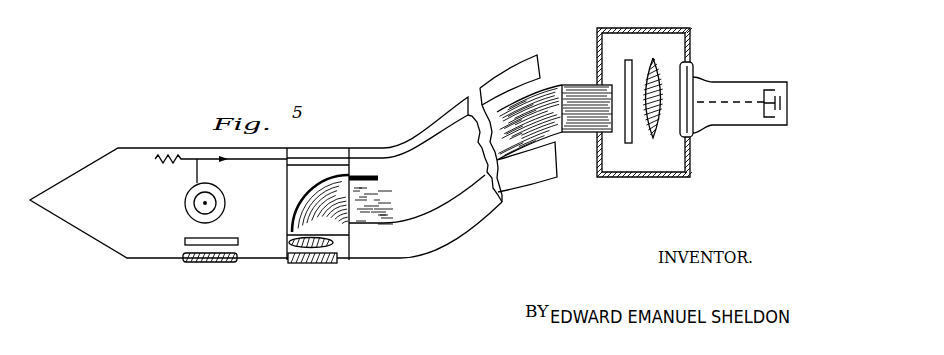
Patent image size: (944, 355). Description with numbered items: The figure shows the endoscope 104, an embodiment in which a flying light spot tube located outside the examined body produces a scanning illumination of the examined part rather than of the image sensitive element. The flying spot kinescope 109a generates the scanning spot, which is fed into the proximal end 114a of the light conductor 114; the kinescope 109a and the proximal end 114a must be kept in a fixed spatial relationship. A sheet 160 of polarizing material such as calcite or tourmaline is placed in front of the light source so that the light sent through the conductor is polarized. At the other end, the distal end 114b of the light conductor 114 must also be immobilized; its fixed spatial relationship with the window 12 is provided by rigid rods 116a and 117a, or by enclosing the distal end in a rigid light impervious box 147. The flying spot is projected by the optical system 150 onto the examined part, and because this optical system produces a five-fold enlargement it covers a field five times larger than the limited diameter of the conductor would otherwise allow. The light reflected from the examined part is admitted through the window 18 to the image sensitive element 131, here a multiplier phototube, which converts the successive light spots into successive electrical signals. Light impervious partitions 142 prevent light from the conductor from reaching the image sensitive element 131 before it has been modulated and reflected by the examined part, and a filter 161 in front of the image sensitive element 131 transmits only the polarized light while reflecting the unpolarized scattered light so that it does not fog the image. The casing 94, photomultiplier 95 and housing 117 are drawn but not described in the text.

The endoscope 104 is at (133, 182).
The image sensitive element 131 is at (190, 210).
The filter 161 is at (183, 240).
The window 18 is at (205, 263).
The light impervious partitions 142 is at (303, 165).
The rigid light impervious box 147 is at (298, 183).
The optical system 150 is at (290, 248).
The window 12 is at (316, 265).
The distal end of the light conductor 114b is at (334, 240).
The rigid rod 117a is at (349, 245).
The rigid rod 116a is at (351, 150).
The light conductor 114 is at (443, 195).
The proximal end of the light conductor 114a is at (584, 38).
The tube 117 is at (618, 43).
The casing 94 is at (680, 87).
The photomultiplier 95 is at (690, 63).
The kinescope 109a is at (729, 92).
The sheet 160 is at (627, 143).